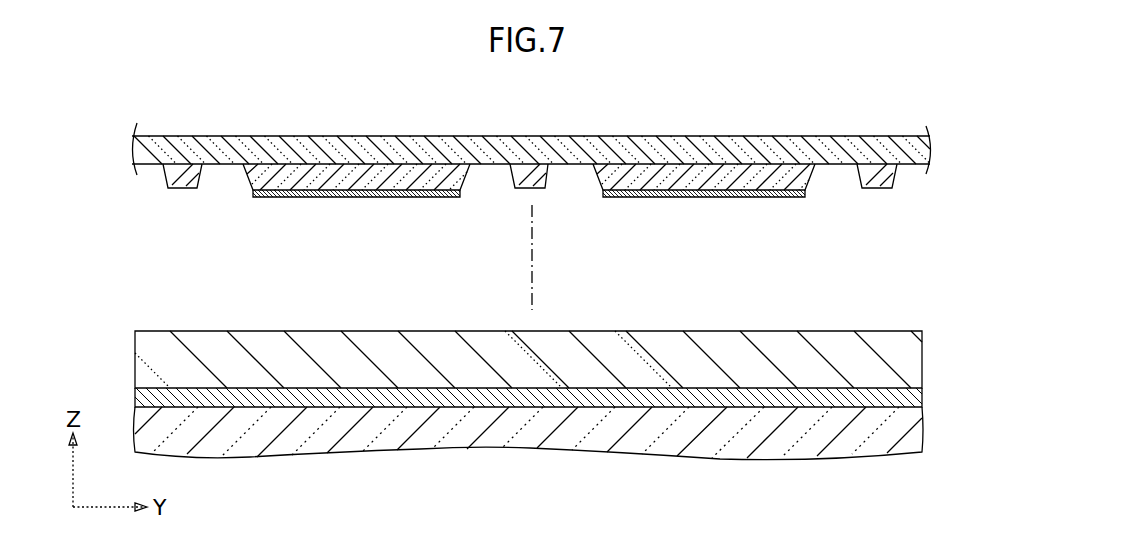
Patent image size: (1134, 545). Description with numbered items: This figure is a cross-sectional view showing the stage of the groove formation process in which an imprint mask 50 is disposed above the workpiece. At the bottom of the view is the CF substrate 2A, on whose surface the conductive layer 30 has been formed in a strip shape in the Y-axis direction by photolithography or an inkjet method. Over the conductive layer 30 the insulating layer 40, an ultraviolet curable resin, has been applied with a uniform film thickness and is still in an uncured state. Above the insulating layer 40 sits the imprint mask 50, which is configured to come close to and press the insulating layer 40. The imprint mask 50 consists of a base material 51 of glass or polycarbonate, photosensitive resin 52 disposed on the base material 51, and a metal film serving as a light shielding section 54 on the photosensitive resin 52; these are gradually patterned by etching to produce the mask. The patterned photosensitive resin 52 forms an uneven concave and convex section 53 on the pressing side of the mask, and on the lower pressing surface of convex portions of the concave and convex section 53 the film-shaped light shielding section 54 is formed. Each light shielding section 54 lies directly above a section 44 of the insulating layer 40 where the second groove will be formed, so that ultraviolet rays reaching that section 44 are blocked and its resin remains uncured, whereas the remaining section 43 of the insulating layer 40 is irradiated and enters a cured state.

The CF substrate 2A is at (912, 435).
The conductive layer 30 is at (915, 396).
The insulating layer 40 is at (910, 363).
The section other than the section where the second groove is formed 43 is at (178, 333).
The section where the second groove is formed 44 is at (338, 333).
The imprint mask 50 is at (888, 117).
The base material 51 is at (918, 148).
The photosensitive resin 52 is at (893, 175).
The concave and convex section 53 is at (868, 219).
The light shielding section 54 is at (354, 196).